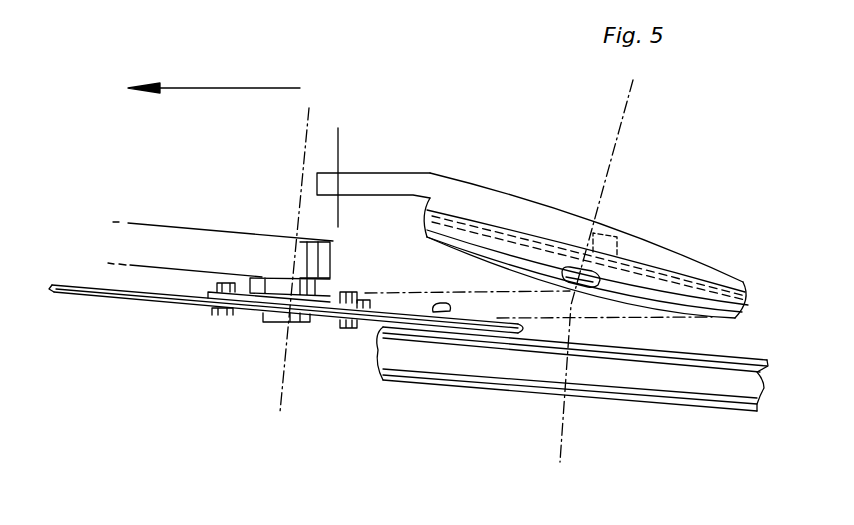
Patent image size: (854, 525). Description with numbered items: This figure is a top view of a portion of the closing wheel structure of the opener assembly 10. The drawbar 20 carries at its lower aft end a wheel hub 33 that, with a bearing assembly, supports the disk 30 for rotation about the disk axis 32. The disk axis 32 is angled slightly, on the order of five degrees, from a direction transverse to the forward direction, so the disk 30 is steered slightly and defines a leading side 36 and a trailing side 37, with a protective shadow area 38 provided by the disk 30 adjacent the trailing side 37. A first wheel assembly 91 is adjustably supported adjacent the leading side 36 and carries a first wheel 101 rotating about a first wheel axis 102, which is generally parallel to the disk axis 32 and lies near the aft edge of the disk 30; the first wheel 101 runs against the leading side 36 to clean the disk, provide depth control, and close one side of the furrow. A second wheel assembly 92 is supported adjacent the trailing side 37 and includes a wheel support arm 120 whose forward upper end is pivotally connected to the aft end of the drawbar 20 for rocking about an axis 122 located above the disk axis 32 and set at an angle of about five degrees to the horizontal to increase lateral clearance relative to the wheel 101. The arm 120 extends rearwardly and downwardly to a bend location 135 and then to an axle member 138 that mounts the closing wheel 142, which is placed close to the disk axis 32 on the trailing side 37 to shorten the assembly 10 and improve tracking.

The opener assembly 10 is at (222, 447).
The drawbar 20 is at (172, 226).
The disk 30 is at (273, 297).
The disk axis 32 is at (282, 358).
The wheel hub 33 is at (250, 280).
The leading side 36 is at (131, 300).
The trailing side 37 is at (82, 282).
The protective shadow area 38 is at (392, 301).
The first wheel assembly 91 is at (565, 392).
The second wheel assembly 92 is at (532, 208).
The first wheel 101 is at (677, 397).
The first wheel axis 102 is at (563, 435).
The wheel support arm 120 is at (375, 170).
The arm pivot axis 122 is at (325, 137).
The bend location 135 is at (438, 170).
The axle member 138 is at (565, 268).
The closing wheel 142 is at (657, 257).